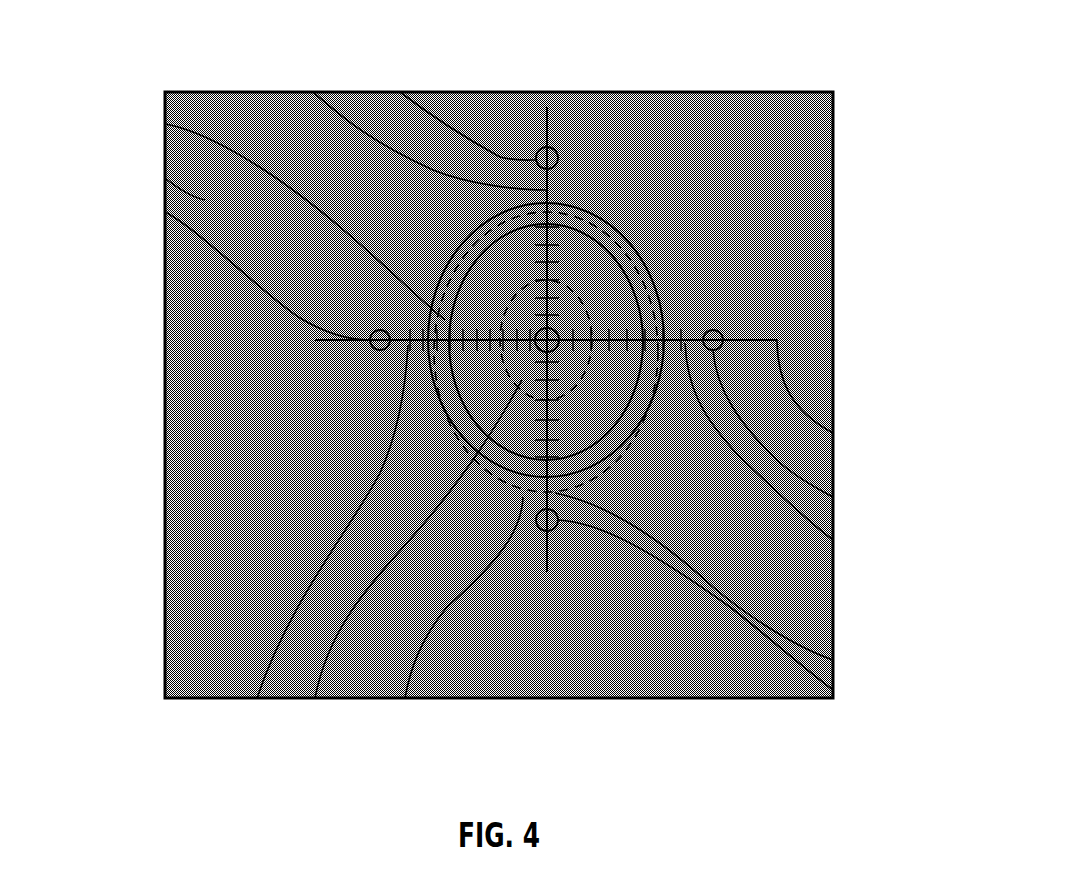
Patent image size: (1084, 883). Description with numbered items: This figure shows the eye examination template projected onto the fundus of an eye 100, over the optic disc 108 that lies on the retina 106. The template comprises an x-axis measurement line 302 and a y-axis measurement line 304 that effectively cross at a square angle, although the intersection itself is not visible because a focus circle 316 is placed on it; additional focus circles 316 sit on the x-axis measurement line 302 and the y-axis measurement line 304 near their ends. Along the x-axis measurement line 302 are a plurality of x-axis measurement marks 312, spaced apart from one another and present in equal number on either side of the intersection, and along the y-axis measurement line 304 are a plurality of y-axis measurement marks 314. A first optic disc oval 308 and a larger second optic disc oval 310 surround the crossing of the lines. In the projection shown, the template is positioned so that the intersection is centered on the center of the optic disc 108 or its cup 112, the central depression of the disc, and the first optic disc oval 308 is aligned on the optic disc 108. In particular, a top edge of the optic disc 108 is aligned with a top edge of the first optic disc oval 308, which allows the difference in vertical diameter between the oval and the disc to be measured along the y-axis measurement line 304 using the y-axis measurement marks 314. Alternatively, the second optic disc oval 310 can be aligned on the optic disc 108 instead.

The eye 100 is at (622, 140).
The retina 106 is at (165, 178).
The optic disc 108 is at (405, 698).
The cup 112 is at (315, 698).
The x-axis measurement line 302 is at (833, 433).
The y-axis measurement line 304 is at (547, 112).
The first optic disc oval 308 is at (648, 268).
The second optic disc oval 310 is at (632, 240).
The x-axis measurement marks 312 is at (833, 540).
The y-axis measurement marks 314 is at (313, 92).
The focus circles 316 is at (400, 92).